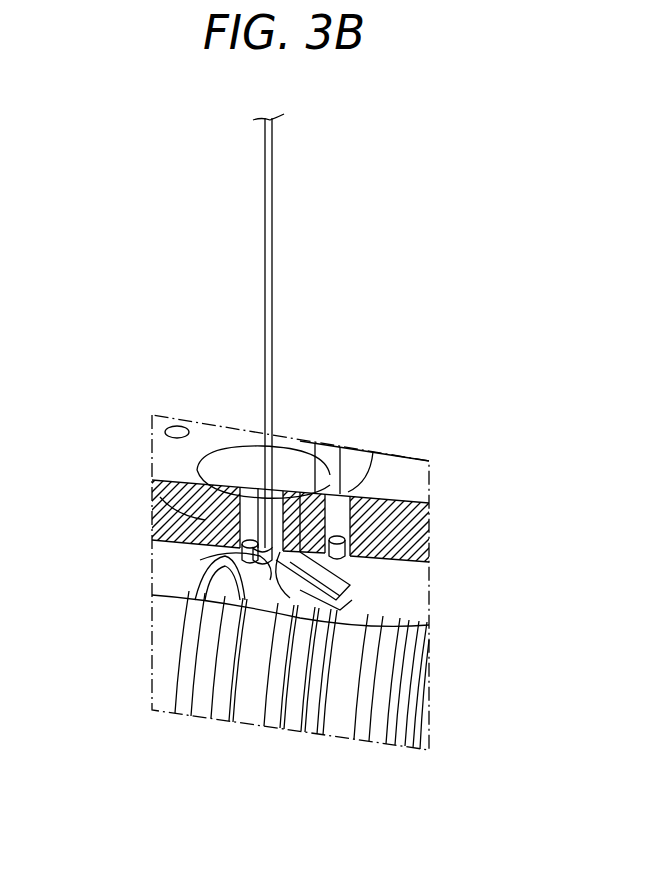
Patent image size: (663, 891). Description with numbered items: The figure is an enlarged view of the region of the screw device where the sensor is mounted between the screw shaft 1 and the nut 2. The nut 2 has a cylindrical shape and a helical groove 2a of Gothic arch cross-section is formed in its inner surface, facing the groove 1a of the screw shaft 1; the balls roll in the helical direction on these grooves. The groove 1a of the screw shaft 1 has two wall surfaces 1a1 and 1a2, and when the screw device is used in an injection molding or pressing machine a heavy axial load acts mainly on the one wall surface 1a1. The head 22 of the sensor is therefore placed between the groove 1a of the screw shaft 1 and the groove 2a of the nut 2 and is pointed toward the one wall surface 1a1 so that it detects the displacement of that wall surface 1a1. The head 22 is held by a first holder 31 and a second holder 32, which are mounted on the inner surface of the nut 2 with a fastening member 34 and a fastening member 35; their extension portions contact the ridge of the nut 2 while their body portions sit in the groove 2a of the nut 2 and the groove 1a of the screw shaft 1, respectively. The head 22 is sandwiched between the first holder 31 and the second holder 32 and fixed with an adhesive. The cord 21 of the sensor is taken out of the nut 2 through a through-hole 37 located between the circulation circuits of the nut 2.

The screw shaft 1 is at (338, 726).
The groove 1a is at (288, 770).
The one wall surface 1a1 is at (293, 670).
The wall surface 1a2 is at (248, 673).
The nut 2 is at (388, 465).
The helical groove 2a is at (287, 550).
The cord 21 is at (272, 243).
The head 22 is at (240, 602).
The first holder 31 is at (327, 570).
The second holder 32 is at (307, 620).
The fastening member 34 is at (380, 547).
The fastening member 35 is at (240, 558).
The through-hole 37 is at (240, 513).